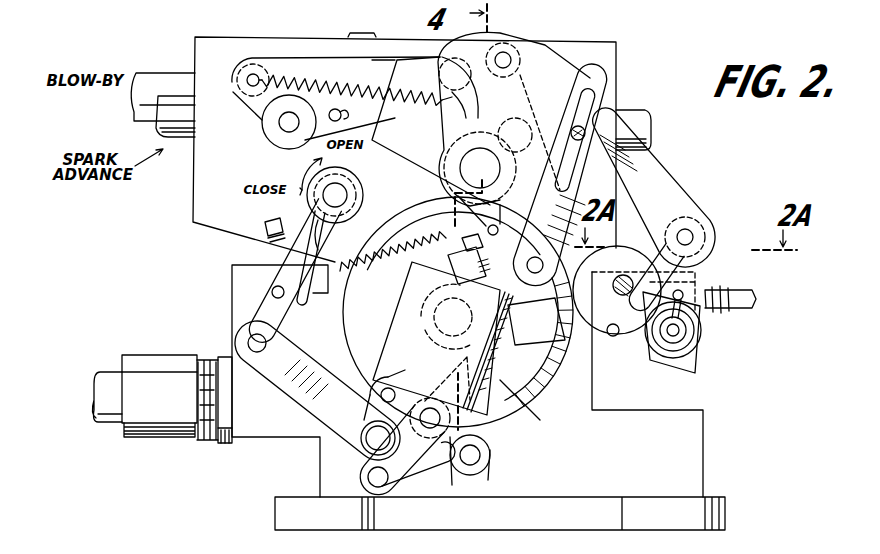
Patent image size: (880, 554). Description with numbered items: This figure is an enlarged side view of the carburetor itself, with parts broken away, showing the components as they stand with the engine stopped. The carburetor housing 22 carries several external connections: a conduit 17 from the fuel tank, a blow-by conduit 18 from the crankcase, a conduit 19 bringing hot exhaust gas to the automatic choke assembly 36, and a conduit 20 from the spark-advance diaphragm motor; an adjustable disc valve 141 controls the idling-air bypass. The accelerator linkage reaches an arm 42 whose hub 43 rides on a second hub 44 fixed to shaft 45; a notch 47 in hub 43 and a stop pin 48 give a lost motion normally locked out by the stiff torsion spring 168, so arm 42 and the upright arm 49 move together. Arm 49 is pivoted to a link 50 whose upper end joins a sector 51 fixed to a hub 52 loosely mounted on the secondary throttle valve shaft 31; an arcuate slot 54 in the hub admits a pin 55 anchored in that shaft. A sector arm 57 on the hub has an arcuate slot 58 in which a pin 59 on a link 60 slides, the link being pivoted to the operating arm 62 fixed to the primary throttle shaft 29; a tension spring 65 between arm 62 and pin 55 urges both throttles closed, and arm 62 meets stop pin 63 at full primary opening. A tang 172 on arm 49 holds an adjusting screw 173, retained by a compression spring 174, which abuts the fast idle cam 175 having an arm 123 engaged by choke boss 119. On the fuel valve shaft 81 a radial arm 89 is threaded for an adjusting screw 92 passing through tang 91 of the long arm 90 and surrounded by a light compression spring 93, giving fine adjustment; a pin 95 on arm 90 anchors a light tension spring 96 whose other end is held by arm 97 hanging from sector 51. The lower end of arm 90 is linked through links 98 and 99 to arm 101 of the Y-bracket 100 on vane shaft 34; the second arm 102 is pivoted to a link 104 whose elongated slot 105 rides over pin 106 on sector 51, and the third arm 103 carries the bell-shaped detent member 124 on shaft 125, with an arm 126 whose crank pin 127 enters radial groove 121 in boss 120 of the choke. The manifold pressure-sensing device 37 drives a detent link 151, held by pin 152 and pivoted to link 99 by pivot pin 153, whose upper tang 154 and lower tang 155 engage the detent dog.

The conduit 17 is at (650, 124).
The conduit 18 is at (158, 72).
The conduit 19 is at (107, 372).
The conduit 20 is at (176, 102).
The carburetor housing 22 is at (233, 247).
The primary throttle shaft 29 is at (282, 125).
The throttle valve shaft 31 is at (494, 150).
The shaft 34 is at (447, 338).
The automatic choke assembly 36 is at (540, 398).
The manifold pressure-sensing device 37 is at (392, 337).
The arm 42 is at (630, 333).
The hub 43 is at (690, 348).
The second hub 44 is at (688, 340).
The shaft 45 is at (690, 335).
The notch 47 is at (650, 370).
The stop pin 48 is at (700, 325).
The arm 49 is at (708, 252).
The link 50 is at (662, 188).
The sector 51 is at (560, 46).
The hub 52 is at (516, 150).
The arcuate slot 54 is at (440, 153).
The pin 55 is at (485, 124).
The sector arm 57 is at (362, 190).
The arcuate slot 58 is at (405, 83).
The pin 59 is at (442, 98).
The link 60 is at (372, 60).
The operating arm 62 is at (252, 104).
The stop pin 63 is at (342, 118).
The tension spring 65 is at (345, 82).
The valve shaft 81 is at (347, 195).
The radial arm 89 is at (344, 226).
The long arm 90 is at (232, 284).
The tang 91 is at (305, 258).
The adjusting screw 92 is at (265, 226).
The light compression spring 93 is at (303, 305).
The pin 95 is at (278, 298).
The light tension spring 96 is at (393, 263).
The arm 97 is at (486, 229).
The link 98 is at (287, 362).
The link 99 is at (378, 410).
The Y-bracket 100 is at (407, 306).
The arm 101 is at (378, 370).
The second arm 102 is at (536, 321).
The third arm 103 is at (498, 340).
The link 104 is at (602, 96).
The elongated slot 105 is at (596, 88).
The pin 106 is at (590, 100).
The boss 119 is at (573, 369).
The boss 120 is at (508, 360).
The radial groove 121 is at (573, 389).
The arm 123 is at (558, 262).
The detent member 124 is at (478, 470).
The shaft 125 is at (470, 478).
The arm 126 is at (505, 445).
The crank pin 127 is at (508, 425).
The disc valve 141 is at (362, 33).
The detent link 151 is at (440, 470).
The pin 152 is at (426, 427).
The pivot pin 153 is at (366, 477).
The upper tang 154 is at (500, 452).
The lower tang 155 is at (436, 512).
The stiff torsion spring 168 is at (672, 358).
The tang 172 is at (712, 282).
The adjusting screw 173 is at (757, 297).
The compression spring 174 is at (750, 288).
The fast idle cam 175 is at (637, 255).